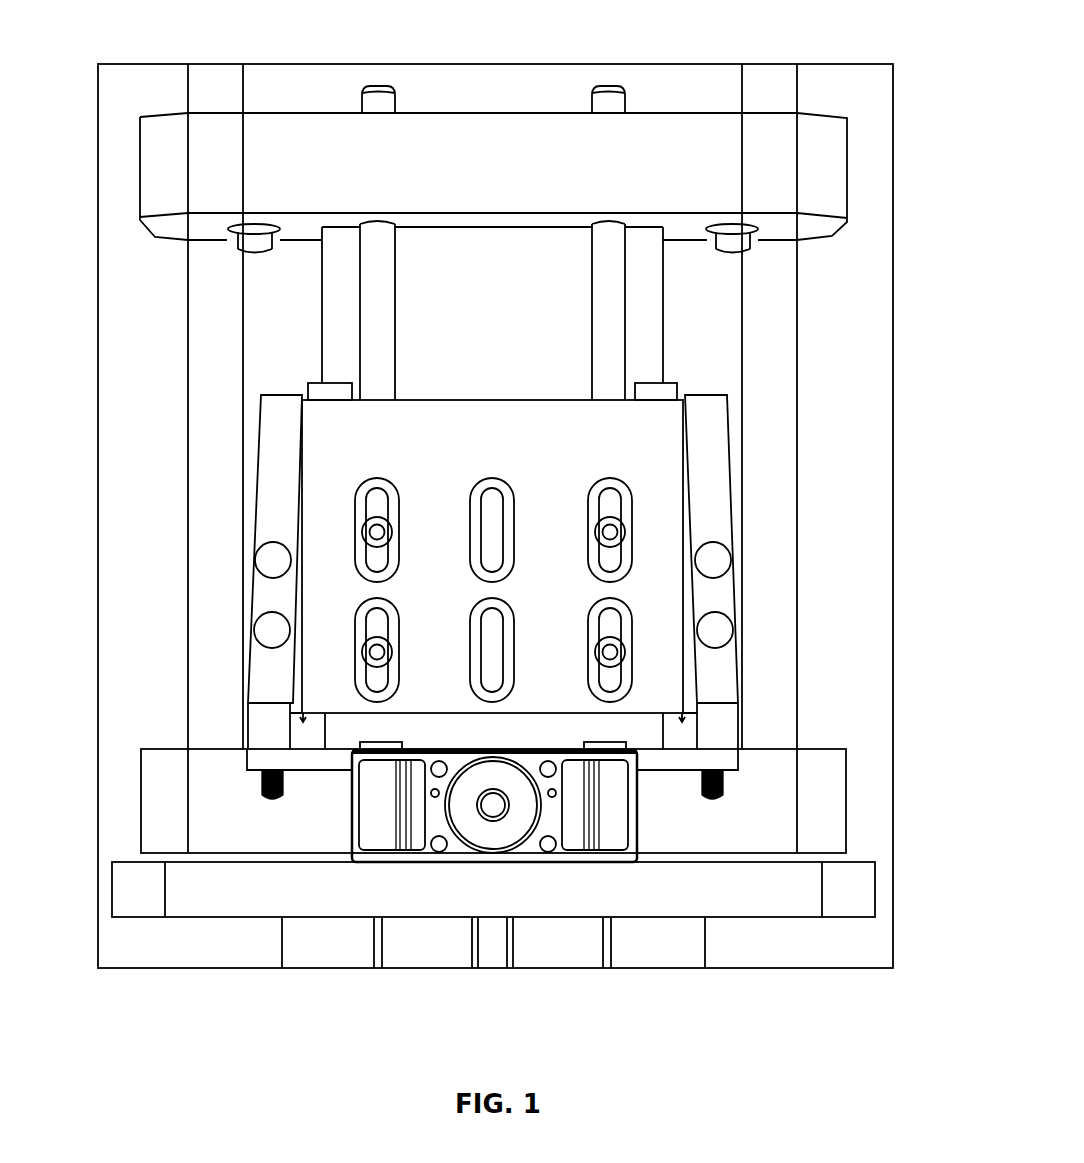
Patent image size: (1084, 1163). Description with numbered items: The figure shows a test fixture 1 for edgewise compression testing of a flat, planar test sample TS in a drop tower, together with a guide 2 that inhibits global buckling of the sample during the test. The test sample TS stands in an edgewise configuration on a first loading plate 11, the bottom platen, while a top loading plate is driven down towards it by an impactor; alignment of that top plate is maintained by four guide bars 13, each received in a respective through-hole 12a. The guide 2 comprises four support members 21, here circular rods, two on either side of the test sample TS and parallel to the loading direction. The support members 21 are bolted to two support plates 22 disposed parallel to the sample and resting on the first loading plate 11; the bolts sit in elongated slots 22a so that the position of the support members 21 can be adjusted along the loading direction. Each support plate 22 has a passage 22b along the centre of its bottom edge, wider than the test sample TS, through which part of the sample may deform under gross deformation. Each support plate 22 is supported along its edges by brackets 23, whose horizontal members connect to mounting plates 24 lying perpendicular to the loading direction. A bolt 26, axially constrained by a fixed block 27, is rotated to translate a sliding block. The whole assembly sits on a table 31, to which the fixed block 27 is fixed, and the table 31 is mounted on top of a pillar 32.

The test fixture 1 is at (68, 131).
The guide 2 is at (501, 517).
The first loading plate 11 is at (230, 813).
The through-hole 12a is at (207, 222).
The guide bar 13 is at (203, 295).
The support member 21 is at (372, 290).
The support plate 22 is at (580, 457).
The elongated slot 22a is at (360, 547).
The passage 22b is at (565, 726).
The bracket 23 is at (277, 477).
The mounting plate 24 is at (312, 758).
The bolt 26 is at (515, 807).
The fixed block 27 is at (602, 813).
The table 31 is at (227, 893).
The pillar 32 is at (426, 940).
The test sample TS is at (440, 285).